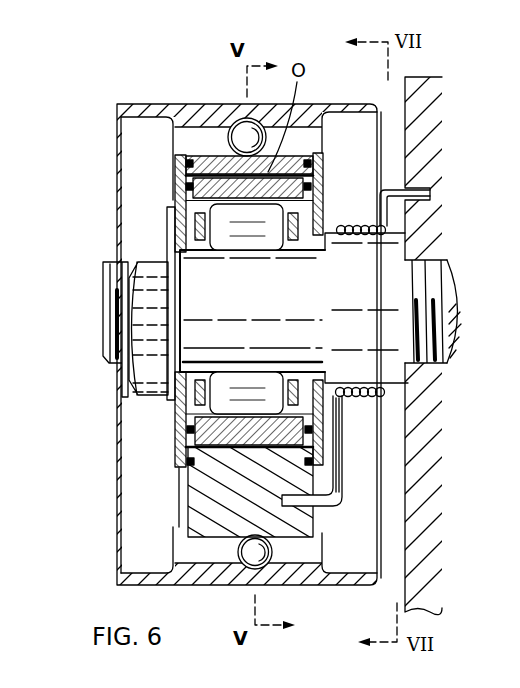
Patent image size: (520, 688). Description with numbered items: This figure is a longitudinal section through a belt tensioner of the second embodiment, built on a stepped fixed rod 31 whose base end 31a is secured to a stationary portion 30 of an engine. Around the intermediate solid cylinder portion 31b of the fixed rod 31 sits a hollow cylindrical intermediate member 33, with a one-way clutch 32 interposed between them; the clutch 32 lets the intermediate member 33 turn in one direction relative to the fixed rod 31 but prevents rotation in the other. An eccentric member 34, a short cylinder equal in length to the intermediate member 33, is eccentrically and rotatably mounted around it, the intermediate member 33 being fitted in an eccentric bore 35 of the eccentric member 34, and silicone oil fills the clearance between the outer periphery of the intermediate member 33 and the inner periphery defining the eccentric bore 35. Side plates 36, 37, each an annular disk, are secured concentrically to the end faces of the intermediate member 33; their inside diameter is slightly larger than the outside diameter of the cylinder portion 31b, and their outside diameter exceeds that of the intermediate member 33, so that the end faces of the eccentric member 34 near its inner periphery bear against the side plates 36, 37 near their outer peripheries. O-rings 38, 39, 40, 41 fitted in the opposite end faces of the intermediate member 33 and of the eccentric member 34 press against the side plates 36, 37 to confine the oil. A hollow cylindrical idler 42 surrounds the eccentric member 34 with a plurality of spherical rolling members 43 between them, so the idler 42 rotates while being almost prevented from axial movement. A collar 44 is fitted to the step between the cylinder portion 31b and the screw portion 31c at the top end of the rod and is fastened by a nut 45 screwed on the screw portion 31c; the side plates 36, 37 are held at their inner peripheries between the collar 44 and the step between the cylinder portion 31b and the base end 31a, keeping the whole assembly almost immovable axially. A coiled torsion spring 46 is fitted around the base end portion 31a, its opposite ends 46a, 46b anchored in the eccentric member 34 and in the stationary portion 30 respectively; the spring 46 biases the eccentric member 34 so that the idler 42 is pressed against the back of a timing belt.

The stationary portion 30 is at (403, 98).
The fixed rod 31 is at (0, 0).
The base end 31a is at (398, 228).
The intermediate solid cylinder portion 31b is at (315, 266).
The screw portion 31c is at (112, 364).
The one-way clutch 32 is at (250, 252).
The intermediate member 33 is at (212, 182).
The eccentric member 34 is at (195, 519).
The eccentric bore 35 is at (192, 442).
The side plate 36 is at (322, 166).
The side plate 37 is at (168, 192).
The O-ring 38 is at (312, 431).
The O-ring 39 is at (188, 430).
The O-ring 40 is at (328, 462).
The O-ring 41 is at (188, 461).
The idler 42 is at (133, 108).
The spherical rolling members 43 is at (230, 126).
The collar 44 is at (162, 215).
The nut 45 is at (137, 241).
The coiled torsion spring 46 is at (370, 398).
The spring end 46a is at (303, 504).
The spring end 46b is at (428, 192).